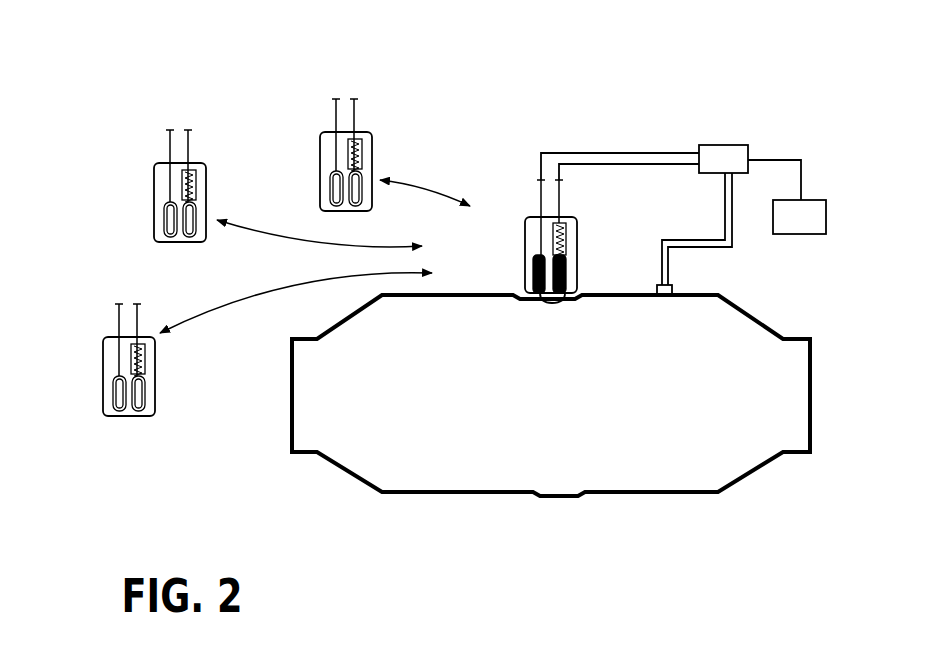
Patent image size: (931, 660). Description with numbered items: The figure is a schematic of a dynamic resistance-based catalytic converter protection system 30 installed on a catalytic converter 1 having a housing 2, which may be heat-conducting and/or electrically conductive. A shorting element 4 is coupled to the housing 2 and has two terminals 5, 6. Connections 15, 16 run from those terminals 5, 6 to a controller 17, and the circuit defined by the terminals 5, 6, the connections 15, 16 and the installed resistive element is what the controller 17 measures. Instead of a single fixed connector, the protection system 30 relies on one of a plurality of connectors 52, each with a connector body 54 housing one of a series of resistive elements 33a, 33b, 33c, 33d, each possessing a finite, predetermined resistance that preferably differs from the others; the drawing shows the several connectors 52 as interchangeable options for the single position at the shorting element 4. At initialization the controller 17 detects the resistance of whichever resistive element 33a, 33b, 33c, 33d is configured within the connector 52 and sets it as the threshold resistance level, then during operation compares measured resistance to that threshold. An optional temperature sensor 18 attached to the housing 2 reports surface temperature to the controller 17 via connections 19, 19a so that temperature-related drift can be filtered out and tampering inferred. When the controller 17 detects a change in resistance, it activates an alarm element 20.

The catalytic converter 1 is at (777, 317).
The housing 2 is at (460, 294).
The shorting element 4 is at (532, 301).
The terminal 5 is at (533, 272).
The terminal 6 is at (567, 268).
The connection 15 is at (538, 163).
The connection 16 is at (593, 166).
The controller 17 is at (717, 170).
The temperature sensor 18 is at (657, 287).
The connection 19 is at (697, 238).
The connection 19a is at (705, 249).
The alarm element 20 is at (793, 227).
The catalytic converter protection system 30 is at (835, 150).
The resistive element 33a is at (567, 234).
The resistive element 33b is at (362, 152).
The resistive element 33c is at (196, 182).
The resistive element 33d is at (146, 356).
The connector 52 is at (523, 242).
The connector body 54 is at (532, 217).